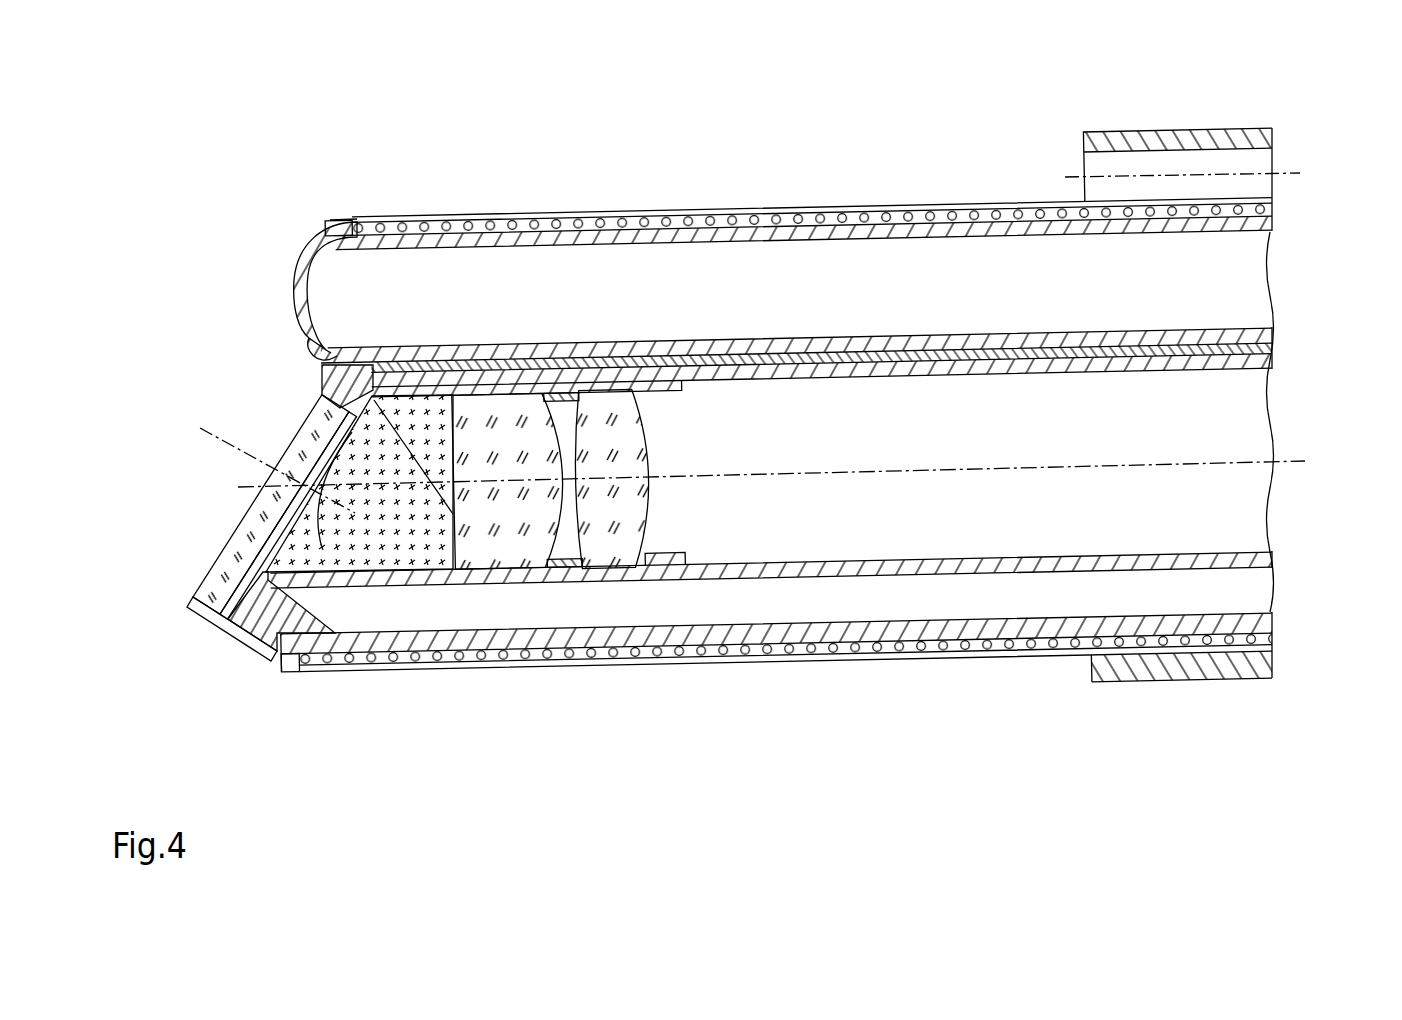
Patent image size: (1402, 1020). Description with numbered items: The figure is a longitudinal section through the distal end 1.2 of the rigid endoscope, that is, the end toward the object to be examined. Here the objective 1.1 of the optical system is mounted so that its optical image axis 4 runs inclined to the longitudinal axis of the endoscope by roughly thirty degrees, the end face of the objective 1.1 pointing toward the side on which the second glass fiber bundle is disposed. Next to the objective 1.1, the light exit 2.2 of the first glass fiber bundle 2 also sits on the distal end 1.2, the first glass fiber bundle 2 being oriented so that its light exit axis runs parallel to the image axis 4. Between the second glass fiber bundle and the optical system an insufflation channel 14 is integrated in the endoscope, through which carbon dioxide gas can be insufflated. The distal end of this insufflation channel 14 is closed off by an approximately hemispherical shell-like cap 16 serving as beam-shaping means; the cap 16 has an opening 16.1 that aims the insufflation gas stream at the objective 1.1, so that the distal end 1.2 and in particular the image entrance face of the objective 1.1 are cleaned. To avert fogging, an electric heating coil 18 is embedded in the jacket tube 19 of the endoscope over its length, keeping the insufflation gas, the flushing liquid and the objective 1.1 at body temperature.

The objective 1.1 is at (226, 508).
The distal end 1.2 is at (291, 213).
The first glass fiber bundle 2 is at (207, 656).
The light exit 2.2 is at (187, 608).
The optical image axis 4 is at (238, 452).
The insufflation channel 14 is at (597, 276).
The hemispherical shell-like cap 16 is at (310, 262).
The opening 16.1 is at (312, 351).
The electric heating coil 18 is at (421, 227).
The jacket tube 19 is at (797, 668).